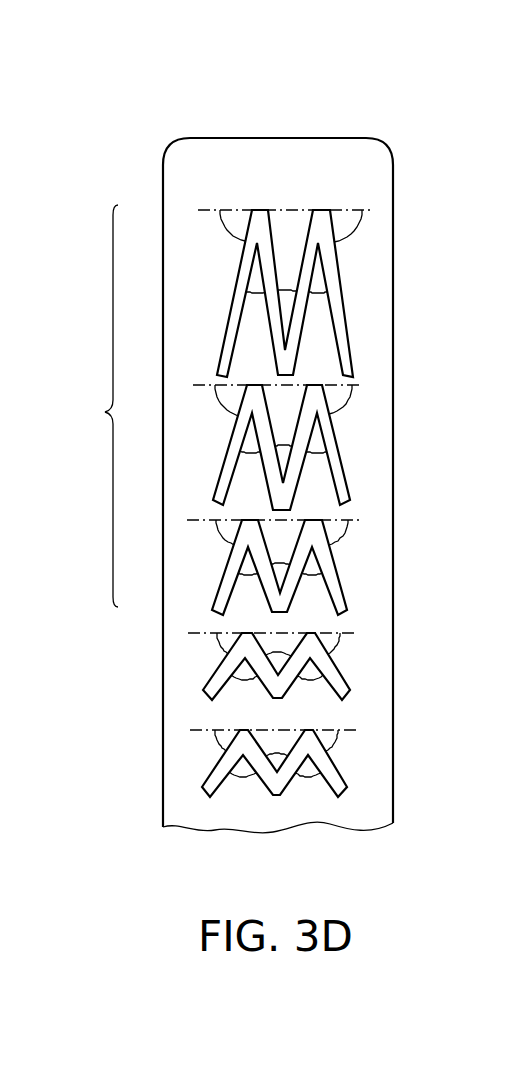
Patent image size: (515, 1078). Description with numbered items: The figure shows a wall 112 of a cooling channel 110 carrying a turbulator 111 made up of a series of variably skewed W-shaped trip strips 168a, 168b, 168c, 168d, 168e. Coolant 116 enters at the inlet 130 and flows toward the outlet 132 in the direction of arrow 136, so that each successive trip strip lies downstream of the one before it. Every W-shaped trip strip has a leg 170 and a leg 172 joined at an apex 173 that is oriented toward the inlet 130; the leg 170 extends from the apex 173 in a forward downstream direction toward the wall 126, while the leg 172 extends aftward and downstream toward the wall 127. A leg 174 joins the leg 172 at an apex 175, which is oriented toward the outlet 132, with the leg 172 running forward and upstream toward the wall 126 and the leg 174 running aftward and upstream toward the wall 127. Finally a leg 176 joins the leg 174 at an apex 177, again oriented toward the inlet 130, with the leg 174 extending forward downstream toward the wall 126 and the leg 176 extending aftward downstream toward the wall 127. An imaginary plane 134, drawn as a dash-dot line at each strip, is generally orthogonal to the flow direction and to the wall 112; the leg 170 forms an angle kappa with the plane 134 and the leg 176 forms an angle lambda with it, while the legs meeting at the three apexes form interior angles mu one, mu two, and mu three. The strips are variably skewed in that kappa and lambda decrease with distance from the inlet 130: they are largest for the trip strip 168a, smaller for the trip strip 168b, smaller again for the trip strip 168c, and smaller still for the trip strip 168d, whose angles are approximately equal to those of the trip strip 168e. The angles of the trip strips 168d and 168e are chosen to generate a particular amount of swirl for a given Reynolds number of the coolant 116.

The cooling channel 110 is at (190, 158).
The turbulator 111 is at (100, 406).
The wall 112 is at (222, 196).
The coolant 116 is at (236, 160).
The wall 126 is at (166, 797).
The wall 127 is at (392, 800).
The inlet 130 is at (337, 138).
The outlet 132 is at (287, 820).
The imaginary plane 134 is at (366, 210).
The arrow 136 is at (79, 302).
The W-shaped trip strip 168a is at (360, 314).
The W-shaped trip strip 168b is at (358, 451).
The W-shaped trip strip 168c is at (358, 576).
The W-shaped trip strip 168d is at (365, 672).
The W-shaped trip strip 168e is at (370, 772).
The leg 170 is at (237, 298).
The leg 172 is at (275, 323).
The apex 173 is at (258, 214).
The leg 174 is at (297, 327).
The apex 175 is at (287, 367).
The leg 176 is at (333, 295).
The apex 177 is at (322, 214).